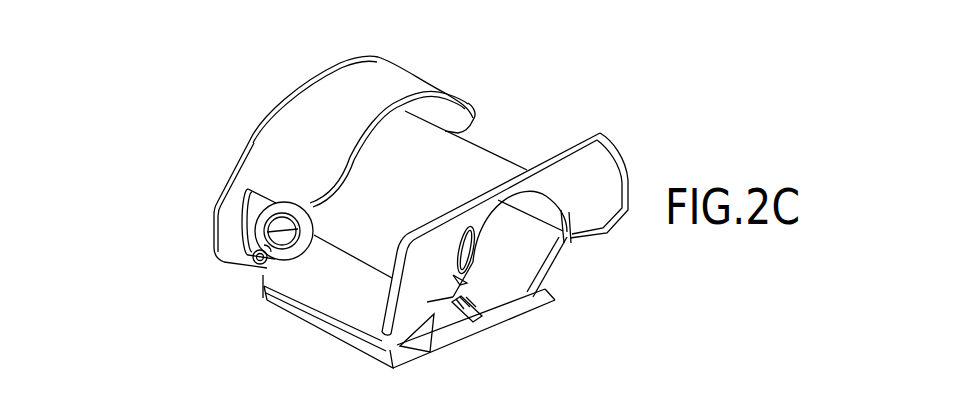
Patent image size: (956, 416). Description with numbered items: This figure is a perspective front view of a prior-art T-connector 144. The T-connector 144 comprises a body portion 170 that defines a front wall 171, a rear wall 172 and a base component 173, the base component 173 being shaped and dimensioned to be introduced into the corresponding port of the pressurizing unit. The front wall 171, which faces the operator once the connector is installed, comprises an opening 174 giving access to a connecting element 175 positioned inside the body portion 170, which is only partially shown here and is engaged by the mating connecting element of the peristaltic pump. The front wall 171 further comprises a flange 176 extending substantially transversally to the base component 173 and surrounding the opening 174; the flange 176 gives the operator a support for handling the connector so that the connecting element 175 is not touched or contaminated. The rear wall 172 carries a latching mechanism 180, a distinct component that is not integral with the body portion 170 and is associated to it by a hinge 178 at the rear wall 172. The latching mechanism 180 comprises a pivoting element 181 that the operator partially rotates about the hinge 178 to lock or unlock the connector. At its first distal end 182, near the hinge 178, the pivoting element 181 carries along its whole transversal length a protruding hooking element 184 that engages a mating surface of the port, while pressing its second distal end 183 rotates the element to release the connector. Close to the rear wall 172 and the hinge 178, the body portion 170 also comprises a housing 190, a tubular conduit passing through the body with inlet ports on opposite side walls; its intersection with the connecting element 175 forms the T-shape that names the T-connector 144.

The T-connector 144 is at (650, 78).
The body portion 170 is at (452, 170).
The front wall 171 is at (557, 270).
The rear wall 172 is at (262, 280).
The base component 173 is at (327, 330).
The opening 174 is at (532, 250).
The connecting element 175 is at (477, 250).
The flange 176 is at (603, 190).
The hinge 178 is at (258, 250).
The latching mechanism 180 is at (436, 68).
The pivoting element 181 is at (287, 143).
The first distal end 182 is at (223, 237).
The second distal end 183 is at (467, 103).
The hooking element 184 is at (222, 255).
The housing 190 is at (283, 205).